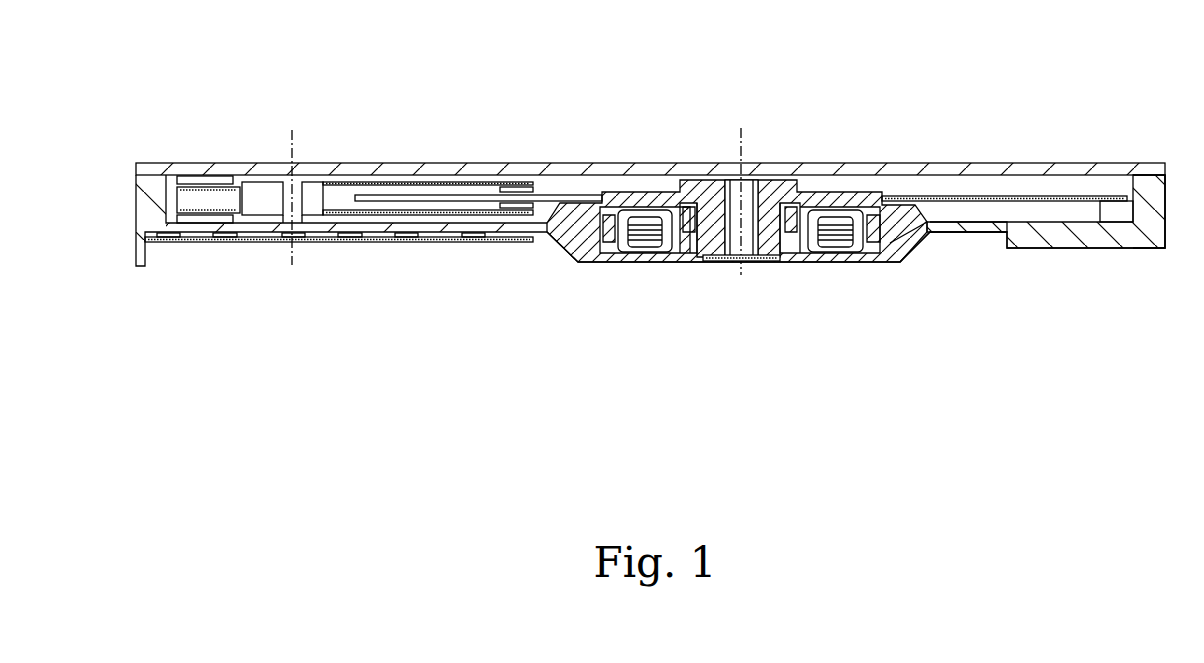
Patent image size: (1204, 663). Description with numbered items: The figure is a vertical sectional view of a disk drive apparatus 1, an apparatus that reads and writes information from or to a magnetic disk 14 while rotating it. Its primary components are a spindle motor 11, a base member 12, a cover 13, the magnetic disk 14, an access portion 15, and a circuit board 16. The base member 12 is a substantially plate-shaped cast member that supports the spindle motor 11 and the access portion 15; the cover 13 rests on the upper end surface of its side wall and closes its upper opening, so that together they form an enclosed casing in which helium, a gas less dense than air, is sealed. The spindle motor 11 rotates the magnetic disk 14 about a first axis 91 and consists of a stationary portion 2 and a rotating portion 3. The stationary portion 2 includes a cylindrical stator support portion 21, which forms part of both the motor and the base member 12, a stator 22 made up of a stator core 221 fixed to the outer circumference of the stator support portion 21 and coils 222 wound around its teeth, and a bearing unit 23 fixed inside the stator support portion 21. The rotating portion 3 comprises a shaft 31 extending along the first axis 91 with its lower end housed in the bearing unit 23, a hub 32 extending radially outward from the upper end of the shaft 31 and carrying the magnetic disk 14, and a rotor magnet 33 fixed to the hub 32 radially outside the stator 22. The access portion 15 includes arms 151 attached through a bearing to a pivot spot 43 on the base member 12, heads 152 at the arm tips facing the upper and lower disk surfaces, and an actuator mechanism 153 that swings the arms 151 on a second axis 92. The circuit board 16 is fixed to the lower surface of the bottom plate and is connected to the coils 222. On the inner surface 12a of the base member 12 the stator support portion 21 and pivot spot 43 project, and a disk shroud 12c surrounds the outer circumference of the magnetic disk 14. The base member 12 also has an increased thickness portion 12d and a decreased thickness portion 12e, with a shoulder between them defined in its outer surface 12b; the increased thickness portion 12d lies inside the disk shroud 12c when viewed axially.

The disk drive apparatus 1 is at (395, 121).
The stationary portion 2 is at (718, 359).
The rotating portion 3 is at (890, 111).
The spindle motor 11 is at (632, 189).
The base member 12 is at (585, 265).
The inner surface 12a is at (1104, 204).
The outer surface 12b is at (963, 234).
The disk shroud 12c is at (1162, 207).
The increased thickness portion 12d is at (1043, 243).
The decreased thickness portion 12e is at (910, 253).
The cover 13 is at (181, 164).
The magnetic disk 14 is at (1032, 196).
The access portion 15 is at (461, 184).
The arm 151 is at (443, 210).
The head 152 is at (516, 208).
The actuator mechanism 153 is at (212, 176).
The circuit board 16 is at (326, 243).
The stator support portion 21 is at (800, 248).
The stator 22 is at (887, 323).
The stator core 221 is at (832, 255).
The coil 222 is at (850, 255).
The bearing unit 23 is at (760, 260).
The shaft 31 is at (752, 182).
The hub 32 is at (817, 192).
The rotor magnet 33 is at (875, 213).
The pivot spot 43 is at (302, 189).
The first axis 91 is at (741, 145).
The second axis 92 is at (290, 153).